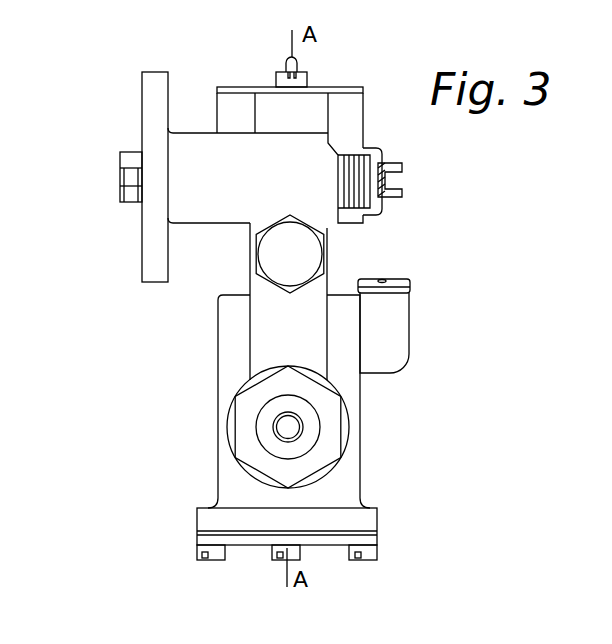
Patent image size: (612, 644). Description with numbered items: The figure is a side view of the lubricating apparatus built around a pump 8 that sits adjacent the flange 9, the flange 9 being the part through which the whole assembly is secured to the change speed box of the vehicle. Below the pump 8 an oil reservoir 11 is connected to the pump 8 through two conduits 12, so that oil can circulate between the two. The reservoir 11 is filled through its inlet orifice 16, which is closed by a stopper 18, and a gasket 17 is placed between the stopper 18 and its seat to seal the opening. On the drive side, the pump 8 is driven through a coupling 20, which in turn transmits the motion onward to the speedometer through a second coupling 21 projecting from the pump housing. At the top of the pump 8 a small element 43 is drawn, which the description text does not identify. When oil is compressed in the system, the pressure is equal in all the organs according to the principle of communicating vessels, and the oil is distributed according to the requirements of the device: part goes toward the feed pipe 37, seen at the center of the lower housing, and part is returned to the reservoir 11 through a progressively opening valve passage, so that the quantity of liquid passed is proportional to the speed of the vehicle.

The pump 8 is at (345, 121).
The flange 9 is at (152, 102).
The oil reservoir 11 is at (348, 465).
The conduits 12 is at (277, 332).
The inlet orifice 16 is at (390, 338).
The gasket 17 is at (408, 290).
The stopper 18 is at (386, 281).
The coupling 20 is at (130, 160).
The coupling 21 is at (395, 191).
The feed pipe 37 is at (287, 432).
The contact pin 43 is at (350, 90).